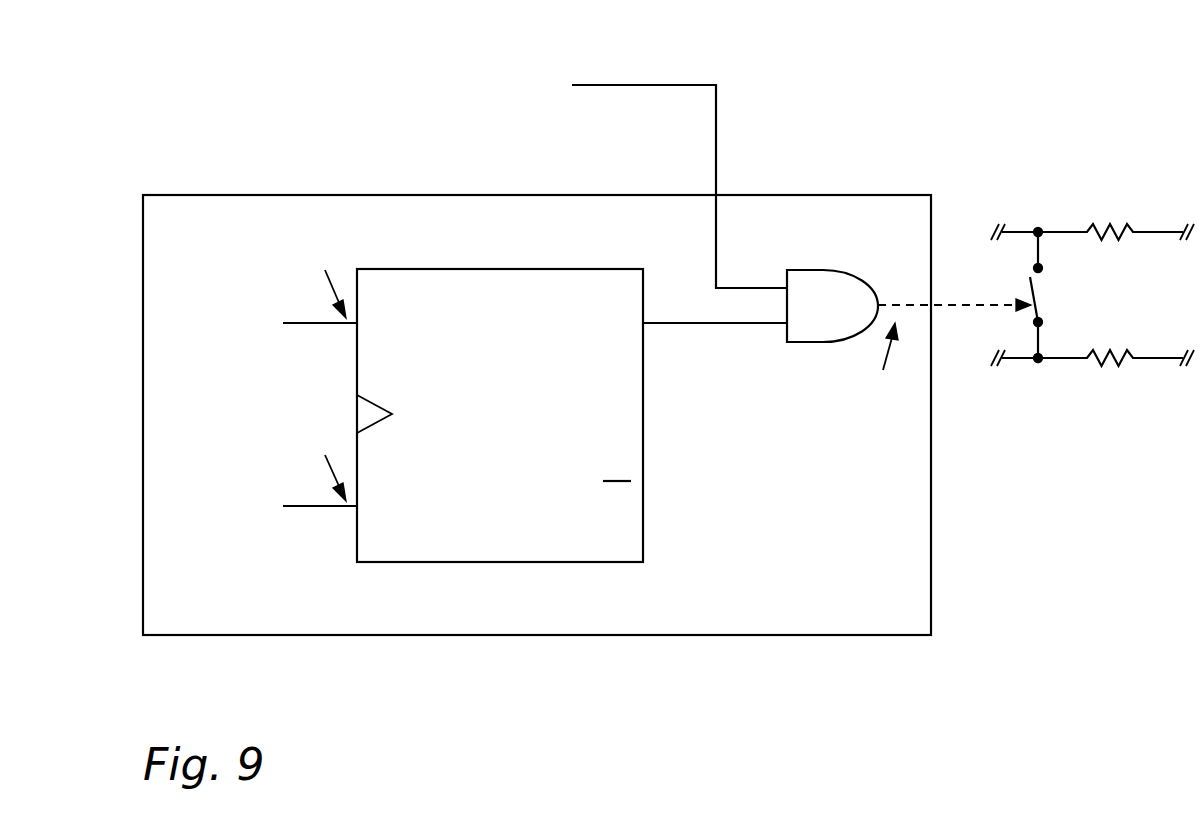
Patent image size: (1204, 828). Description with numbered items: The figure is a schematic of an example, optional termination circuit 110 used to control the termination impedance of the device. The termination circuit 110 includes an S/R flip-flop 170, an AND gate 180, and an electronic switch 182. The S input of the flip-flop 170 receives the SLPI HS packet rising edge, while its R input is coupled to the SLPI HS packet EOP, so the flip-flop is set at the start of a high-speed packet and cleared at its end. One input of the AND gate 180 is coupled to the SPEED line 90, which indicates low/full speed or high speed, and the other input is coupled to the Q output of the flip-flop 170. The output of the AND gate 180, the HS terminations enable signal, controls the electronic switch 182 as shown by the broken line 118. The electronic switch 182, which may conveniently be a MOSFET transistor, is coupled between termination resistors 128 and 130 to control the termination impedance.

The SPEED line 90 is at (722, 125).
The termination circuit 110 is at (757, 207).
The S/R flip-flop 170 is at (620, 453).
The AND gate 180 is at (805, 285).
The broken line 118 is at (975, 312).
The electronic switch 182 is at (1045, 305).
The termination resistor 128 is at (1107, 218).
The termination resistor 130 is at (1107, 345).